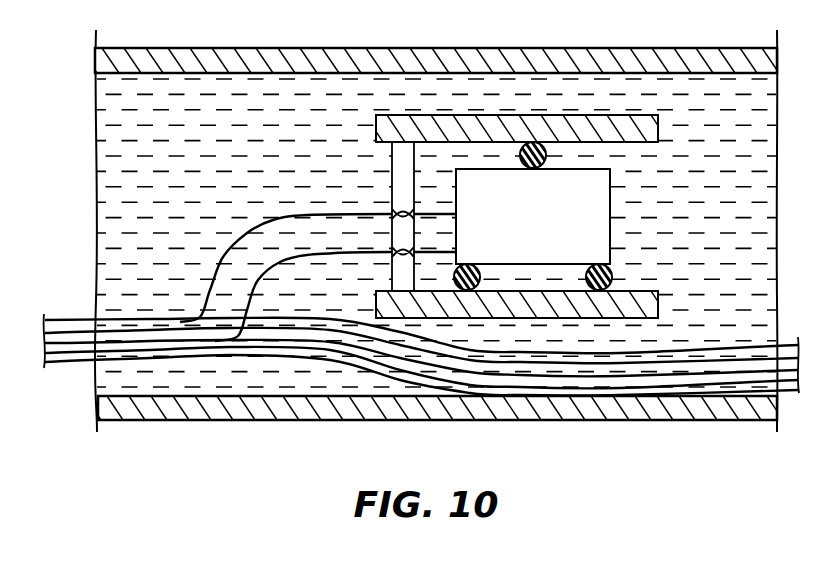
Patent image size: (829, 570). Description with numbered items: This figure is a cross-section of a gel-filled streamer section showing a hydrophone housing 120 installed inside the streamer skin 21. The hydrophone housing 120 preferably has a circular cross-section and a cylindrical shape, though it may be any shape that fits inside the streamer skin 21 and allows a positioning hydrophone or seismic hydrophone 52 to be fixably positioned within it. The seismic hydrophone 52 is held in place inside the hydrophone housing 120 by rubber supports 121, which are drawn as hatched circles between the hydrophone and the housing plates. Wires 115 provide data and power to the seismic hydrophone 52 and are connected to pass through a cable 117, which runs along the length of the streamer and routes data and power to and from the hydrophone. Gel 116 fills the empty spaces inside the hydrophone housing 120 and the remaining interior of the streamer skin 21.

The streamer skin 21 is at (397, 42).
The seismic hydrophone 52 is at (507, 274).
The wires 115 is at (258, 216).
The gel 116 is at (740, 138).
The cable 117 is at (63, 370).
The hydrophone housing 120 is at (641, 118).
The rubber supports 121 is at (532, 133).